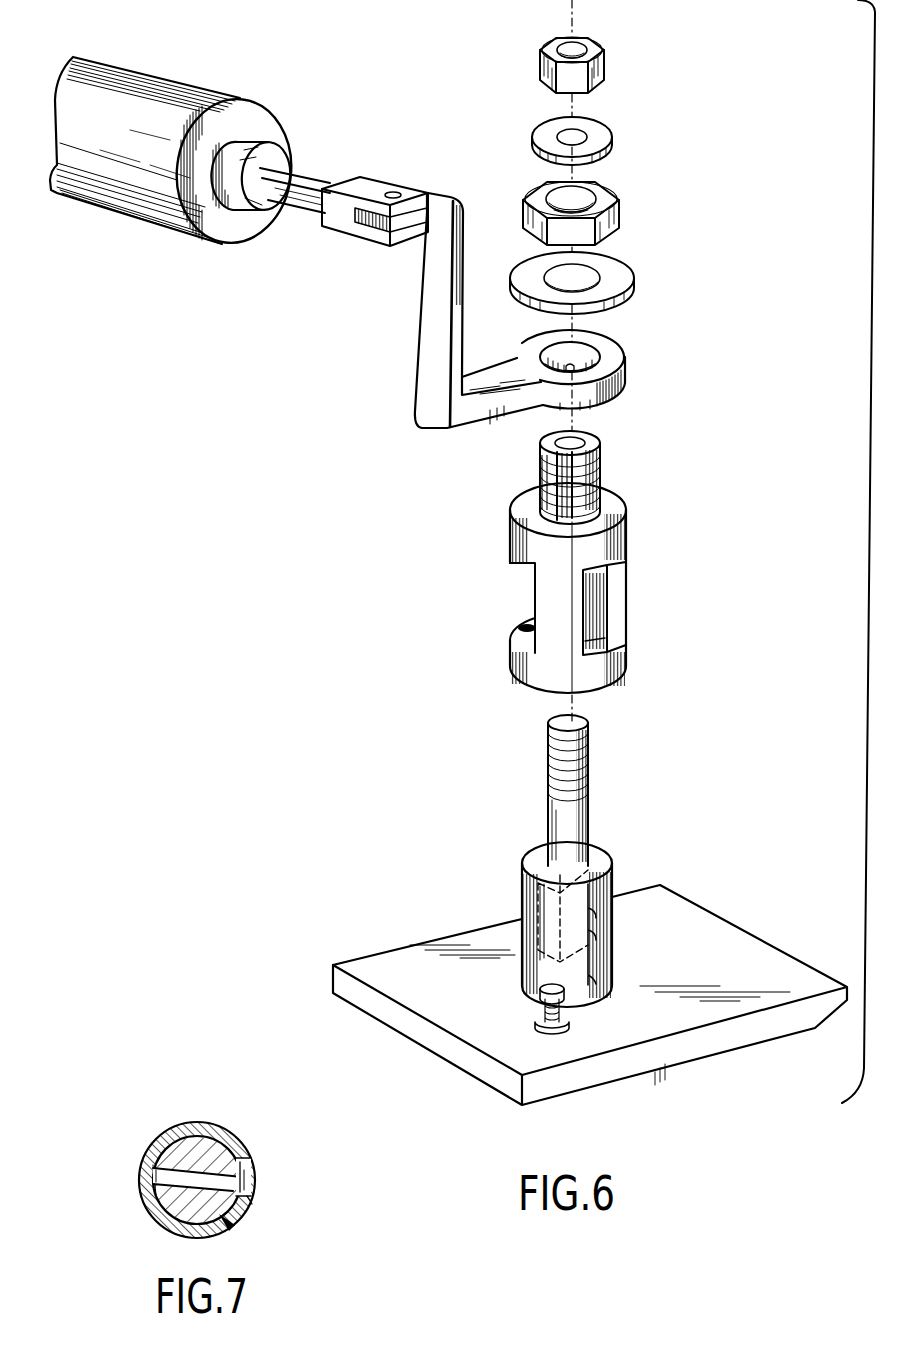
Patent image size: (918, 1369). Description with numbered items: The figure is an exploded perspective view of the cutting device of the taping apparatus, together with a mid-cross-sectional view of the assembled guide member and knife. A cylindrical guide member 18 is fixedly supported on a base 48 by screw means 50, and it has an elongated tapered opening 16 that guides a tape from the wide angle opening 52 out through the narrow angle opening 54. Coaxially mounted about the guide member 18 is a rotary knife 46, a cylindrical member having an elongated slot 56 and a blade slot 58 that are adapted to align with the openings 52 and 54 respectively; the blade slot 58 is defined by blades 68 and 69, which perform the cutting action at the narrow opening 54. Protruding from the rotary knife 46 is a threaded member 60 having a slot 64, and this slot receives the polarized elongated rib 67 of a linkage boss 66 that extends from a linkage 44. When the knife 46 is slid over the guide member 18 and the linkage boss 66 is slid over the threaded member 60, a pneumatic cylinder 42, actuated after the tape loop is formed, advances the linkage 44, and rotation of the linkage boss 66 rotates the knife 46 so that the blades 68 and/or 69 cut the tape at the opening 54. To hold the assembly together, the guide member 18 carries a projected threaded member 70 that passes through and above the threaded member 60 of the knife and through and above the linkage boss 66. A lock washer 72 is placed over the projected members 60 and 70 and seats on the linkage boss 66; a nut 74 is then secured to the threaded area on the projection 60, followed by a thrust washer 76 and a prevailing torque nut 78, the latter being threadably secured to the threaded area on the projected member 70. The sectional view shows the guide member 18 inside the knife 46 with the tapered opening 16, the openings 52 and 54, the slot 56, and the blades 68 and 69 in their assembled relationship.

In FIG. 6, the pneumatic cylinder 42 is at (166, 97).
In FIG. 6, the linkage 44 is at (423, 318).
In FIG. 6, the linkage boss 66 is at (622, 384).
In FIG. 6, the polarized elongated rib 67 is at (574, 364).
In FIG. 6, the prevailing torque nut 78 is at (604, 74).
In FIG. 6, the thrust washer 76 is at (606, 139).
In FIG. 6, the nut 74 is at (618, 217).
In FIG. 6, the lock washer 72 is at (618, 280).
In FIG. 6, the rotary knife 46 is at (506, 538).
In FIG. 7, the rotary knife 46 is at (177, 1121).
In FIG. 6, the threaded member 60 is at (588, 478).
In FIG. 6, the slot 64 is at (565, 473).
In FIG. 6, the elongated slot 56 is at (527, 590).
In FIG. 7, the elongated slot 56 is at (156, 1156).
In FIG. 6, the blade 68 is at (618, 598).
In FIG. 7, the blade 68 is at (241, 1161).
In FIG. 6, the blade slot 58 is at (606, 585).
In FIG. 7, the blade slot 58 is at (241, 1179).
In FIG. 6, the blade 69 is at (585, 630).
In FIG. 7, the blade 69 is at (253, 1206).
In FIG. 6, the projected threaded member 70 is at (549, 750).
In FIG. 6, the cylindrical guide member 18 is at (519, 867).
In FIG. 7, the cylindrical guide member 18 is at (228, 1223).
In FIG. 6, the narrow angle opening 54 is at (598, 937).
In FIG. 7, the narrow angle opening 54 is at (249, 1186).
In FIG. 6, the wide angle opening 52 is at (538, 903).
In FIG. 7, the wide angle opening 52 is at (163, 1178).
In FIG. 6, the elongated tapered opening 16 is at (541, 910).
In FIG. 7, the elongated tapered opening 16 is at (165, 1187).
In FIG. 6, the base 48 is at (757, 952).
In FIG. 6, the screw means 50 is at (530, 1012).